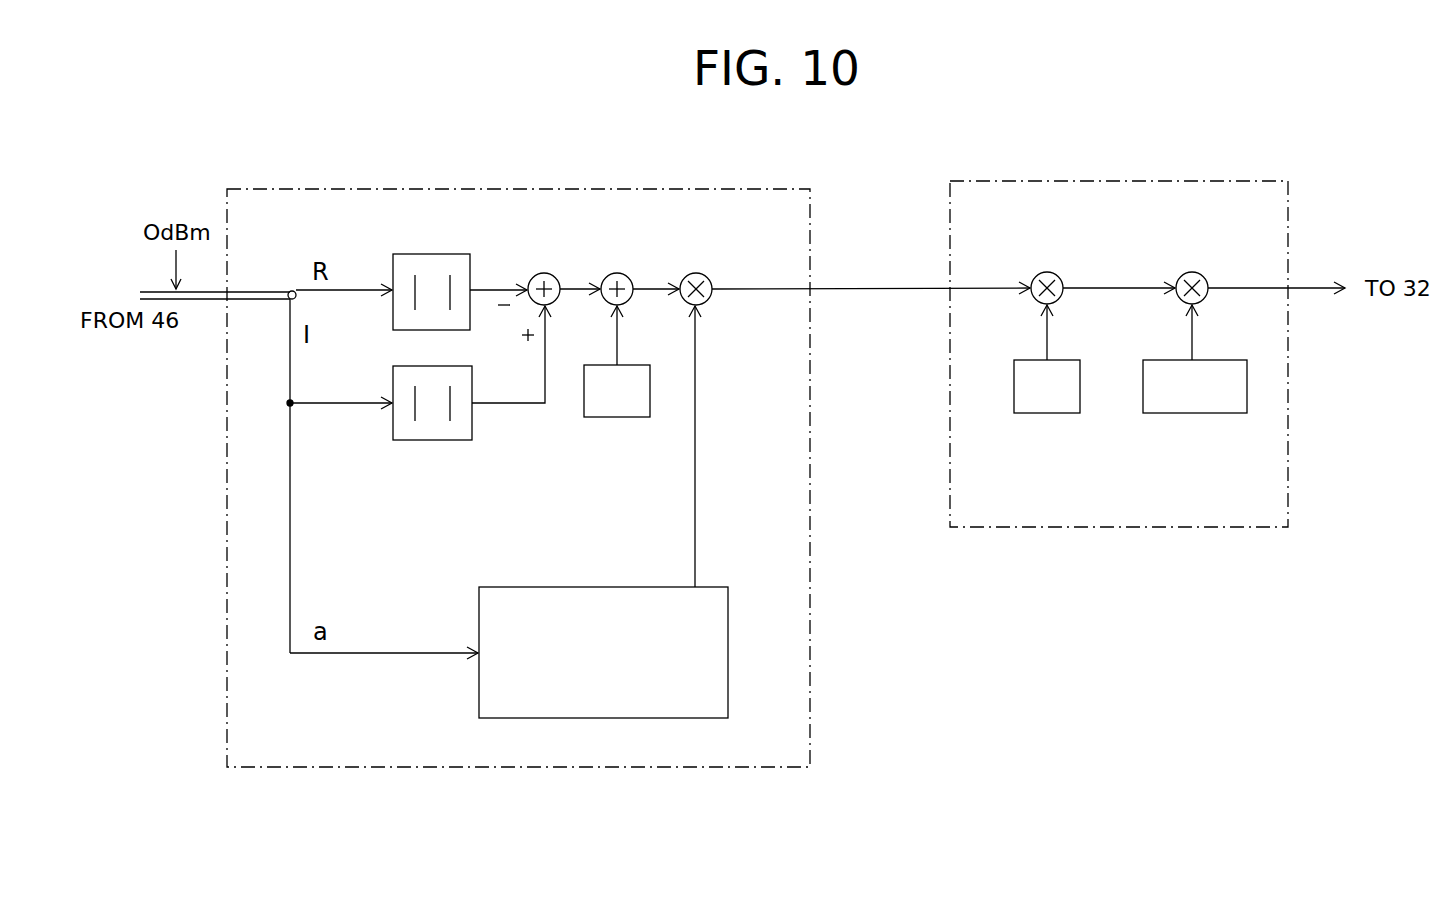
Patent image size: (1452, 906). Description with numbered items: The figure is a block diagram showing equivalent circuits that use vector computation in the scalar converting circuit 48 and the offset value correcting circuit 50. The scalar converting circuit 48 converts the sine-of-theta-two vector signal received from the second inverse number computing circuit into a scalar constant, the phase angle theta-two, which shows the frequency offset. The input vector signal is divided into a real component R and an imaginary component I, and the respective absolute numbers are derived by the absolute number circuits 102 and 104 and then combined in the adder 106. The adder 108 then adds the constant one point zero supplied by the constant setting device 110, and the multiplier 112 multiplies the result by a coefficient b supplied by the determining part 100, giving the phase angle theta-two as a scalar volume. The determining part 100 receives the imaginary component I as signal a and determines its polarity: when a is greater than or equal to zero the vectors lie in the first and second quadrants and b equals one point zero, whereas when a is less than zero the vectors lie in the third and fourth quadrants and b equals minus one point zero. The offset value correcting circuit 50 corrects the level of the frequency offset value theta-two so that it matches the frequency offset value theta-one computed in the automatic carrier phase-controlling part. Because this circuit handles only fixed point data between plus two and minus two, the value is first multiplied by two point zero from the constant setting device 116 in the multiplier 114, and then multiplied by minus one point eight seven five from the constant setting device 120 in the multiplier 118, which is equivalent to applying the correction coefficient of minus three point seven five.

The scalar converting circuit 48 is at (522, 188).
The offset value correcting circuit 50 is at (1190, 180).
The determining part 100 is at (572, 587).
The absolute number circuit 102 is at (420, 254).
The absolute number circuit 104 is at (422, 442).
The adder 106 is at (541, 273).
The adder 108 is at (615, 273).
The constant setting device 110 is at (613, 418).
The multiplier 112 is at (694, 273).
The multiplier 114 is at (1047, 271).
The constant setting device 116 is at (1056, 414).
The multiplier 118 is at (1192, 271).
The constant setting device 120 is at (1208, 414).